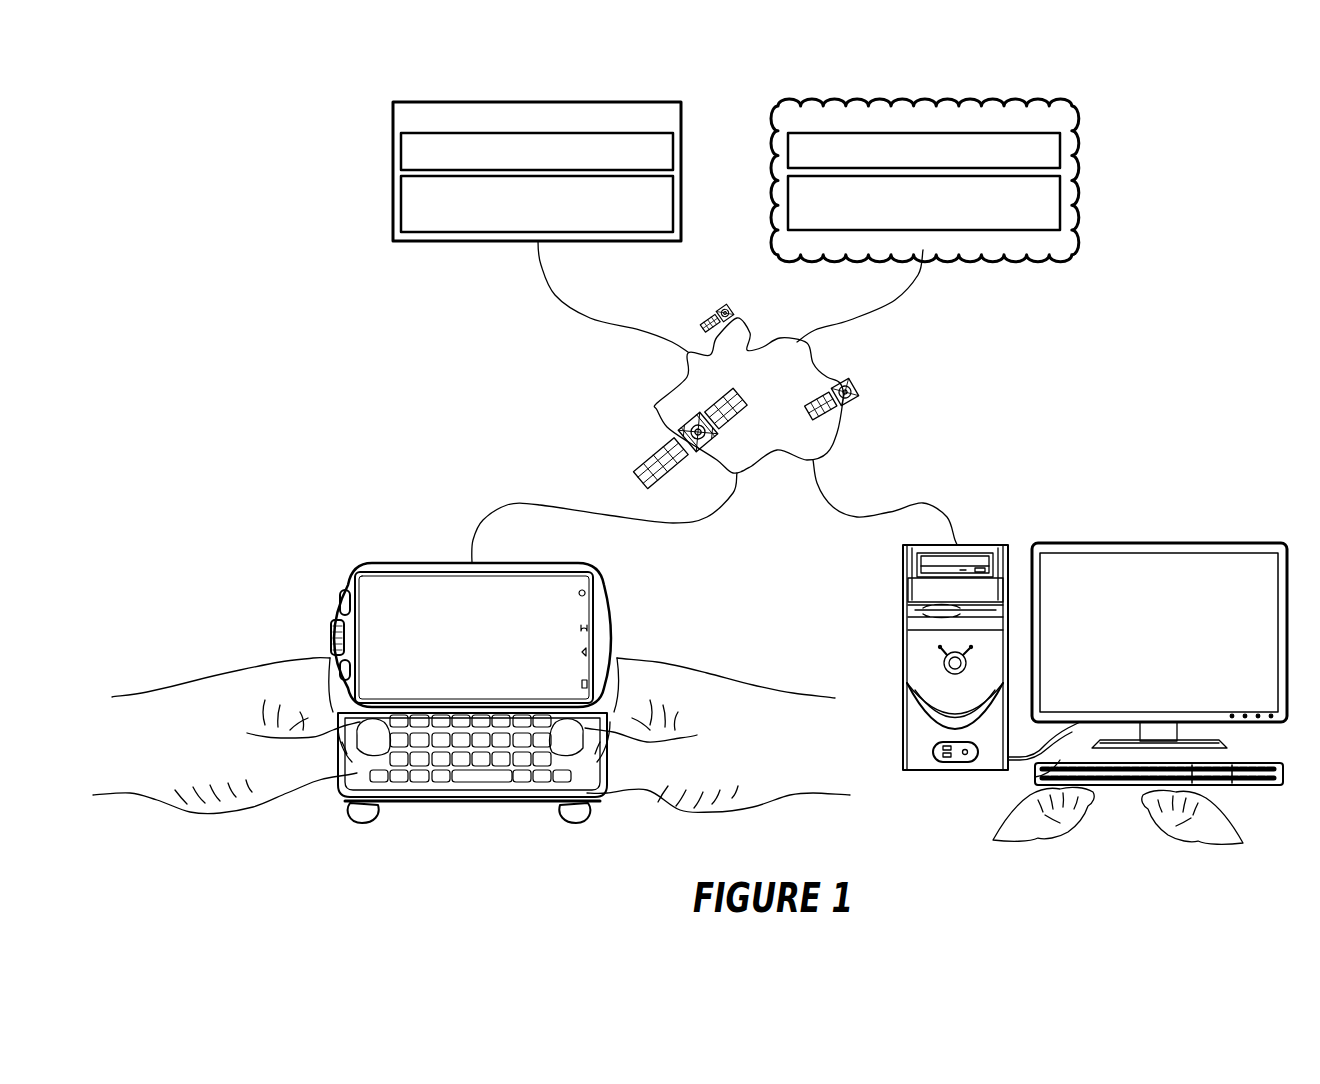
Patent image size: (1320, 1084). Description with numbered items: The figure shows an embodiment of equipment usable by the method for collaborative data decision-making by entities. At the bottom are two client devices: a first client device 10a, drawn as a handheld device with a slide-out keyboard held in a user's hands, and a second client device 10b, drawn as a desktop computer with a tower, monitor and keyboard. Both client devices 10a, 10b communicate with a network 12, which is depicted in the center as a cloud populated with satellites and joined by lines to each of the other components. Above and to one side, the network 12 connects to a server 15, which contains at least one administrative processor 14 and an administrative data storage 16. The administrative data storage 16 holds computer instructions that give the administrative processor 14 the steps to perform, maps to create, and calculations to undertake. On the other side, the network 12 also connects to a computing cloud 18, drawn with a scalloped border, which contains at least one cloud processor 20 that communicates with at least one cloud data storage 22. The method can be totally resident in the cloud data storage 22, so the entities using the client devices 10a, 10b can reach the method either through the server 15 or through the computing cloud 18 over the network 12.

The first client device 10a is at (596, 568).
The second client device 10b is at (902, 561).
The network 12 is at (658, 399).
The administrative processor 14 is at (401, 154).
The server 15 is at (392, 117).
The administrative data storage 16 is at (401, 201).
The computing cloud 18 is at (1072, 118).
The cloud processor 20 is at (1060, 150).
The cloud data storage 22 is at (1060, 202).